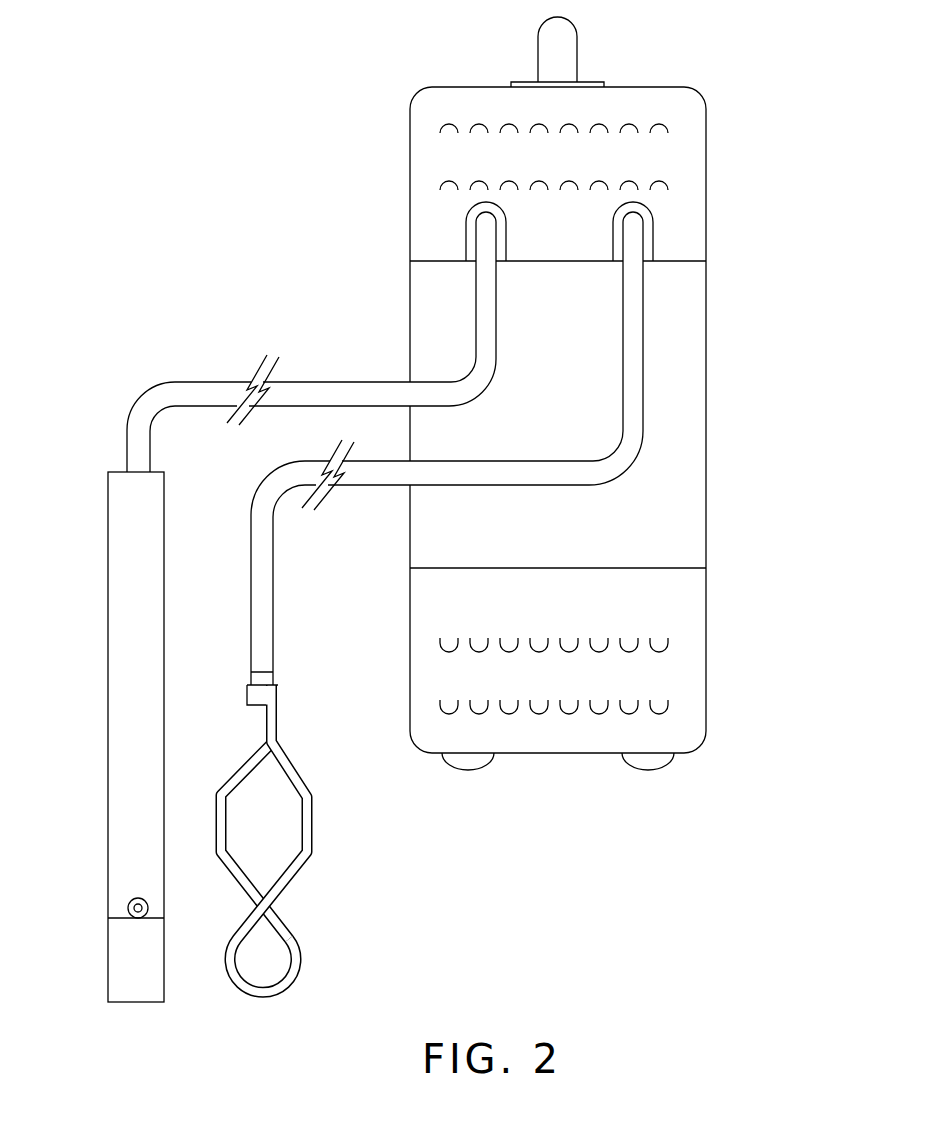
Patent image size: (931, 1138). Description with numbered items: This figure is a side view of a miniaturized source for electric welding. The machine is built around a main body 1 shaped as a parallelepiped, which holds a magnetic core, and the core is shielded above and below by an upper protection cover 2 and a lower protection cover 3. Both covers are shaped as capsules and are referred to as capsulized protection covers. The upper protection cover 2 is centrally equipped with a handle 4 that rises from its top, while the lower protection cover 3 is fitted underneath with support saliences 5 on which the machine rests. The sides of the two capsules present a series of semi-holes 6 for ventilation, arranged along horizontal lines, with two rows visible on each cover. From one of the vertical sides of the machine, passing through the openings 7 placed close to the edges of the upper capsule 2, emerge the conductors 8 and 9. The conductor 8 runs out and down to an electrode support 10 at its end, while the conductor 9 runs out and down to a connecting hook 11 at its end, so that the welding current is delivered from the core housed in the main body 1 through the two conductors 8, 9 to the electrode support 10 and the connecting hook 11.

The main body 1 is at (677, 398).
The upper protection cover 2 is at (680, 153).
The lower protection cover 3 is at (678, 678).
The handle 4 is at (563, 63).
The support saliences 5 is at (650, 765).
The semi-holes 6 is at (670, 122).
The openings 7 is at (465, 230).
The conductor 8 is at (358, 392).
The conductor 9 is at (387, 467).
The electrode support 10 is at (135, 670).
The connecting hook 11 is at (307, 830).